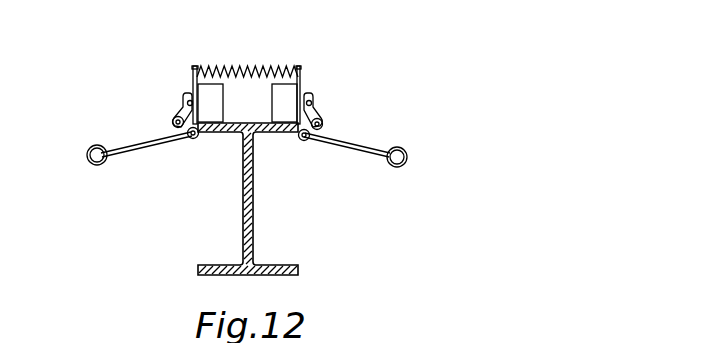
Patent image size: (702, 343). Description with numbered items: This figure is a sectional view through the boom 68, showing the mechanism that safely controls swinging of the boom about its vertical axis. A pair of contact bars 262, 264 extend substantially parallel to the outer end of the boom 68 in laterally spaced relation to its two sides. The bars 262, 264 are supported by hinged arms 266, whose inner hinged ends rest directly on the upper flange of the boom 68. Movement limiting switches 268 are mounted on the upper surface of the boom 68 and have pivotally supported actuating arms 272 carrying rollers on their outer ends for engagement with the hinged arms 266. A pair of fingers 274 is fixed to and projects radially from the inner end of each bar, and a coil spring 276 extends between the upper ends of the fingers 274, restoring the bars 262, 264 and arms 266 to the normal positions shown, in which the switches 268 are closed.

The boom 68 is at (253, 205).
The contact bar 262 is at (100, 145).
The contact bar 264 is at (406, 152).
The arms 266 is at (128, 145).
The movement limiting switch 268 is at (213, 102).
The actuating arm 272 is at (178, 116).
The fingers 274 is at (194, 66).
The coil spring 276 is at (247, 66).